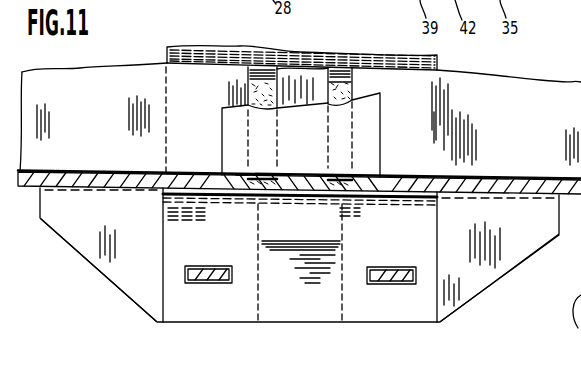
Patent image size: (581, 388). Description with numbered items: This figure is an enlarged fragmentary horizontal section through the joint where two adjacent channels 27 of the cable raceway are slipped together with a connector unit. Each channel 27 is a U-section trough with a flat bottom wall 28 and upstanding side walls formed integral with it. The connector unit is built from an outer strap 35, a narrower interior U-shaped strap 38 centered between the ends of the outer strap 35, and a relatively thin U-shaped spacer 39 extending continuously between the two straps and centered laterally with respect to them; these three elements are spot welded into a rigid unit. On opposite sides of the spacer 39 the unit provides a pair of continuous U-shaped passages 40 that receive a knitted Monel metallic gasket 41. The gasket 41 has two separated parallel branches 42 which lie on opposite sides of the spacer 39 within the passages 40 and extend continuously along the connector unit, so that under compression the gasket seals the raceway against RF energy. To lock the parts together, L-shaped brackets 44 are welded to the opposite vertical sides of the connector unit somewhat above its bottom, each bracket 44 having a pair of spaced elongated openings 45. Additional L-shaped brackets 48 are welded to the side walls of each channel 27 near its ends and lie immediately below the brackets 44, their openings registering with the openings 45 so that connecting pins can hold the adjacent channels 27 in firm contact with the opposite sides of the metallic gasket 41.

The channel 27 is at (97, 174).
The flat bottom wall 28 is at (557, 0).
The outer strap 35 is at (226, 197).
The interior U-shaped strap 38 is at (300, 172).
The spacer 39 is at (313, 200).
The passages 40 is at (242, 176).
The metallic gasket 41 is at (341, 85).
The branches 42 is at (248, 172).
The L-shaped brackets 44 is at (362, 300).
The elongated openings 45 is at (207, 286).
The L-shaped brackets 48 is at (118, 262).